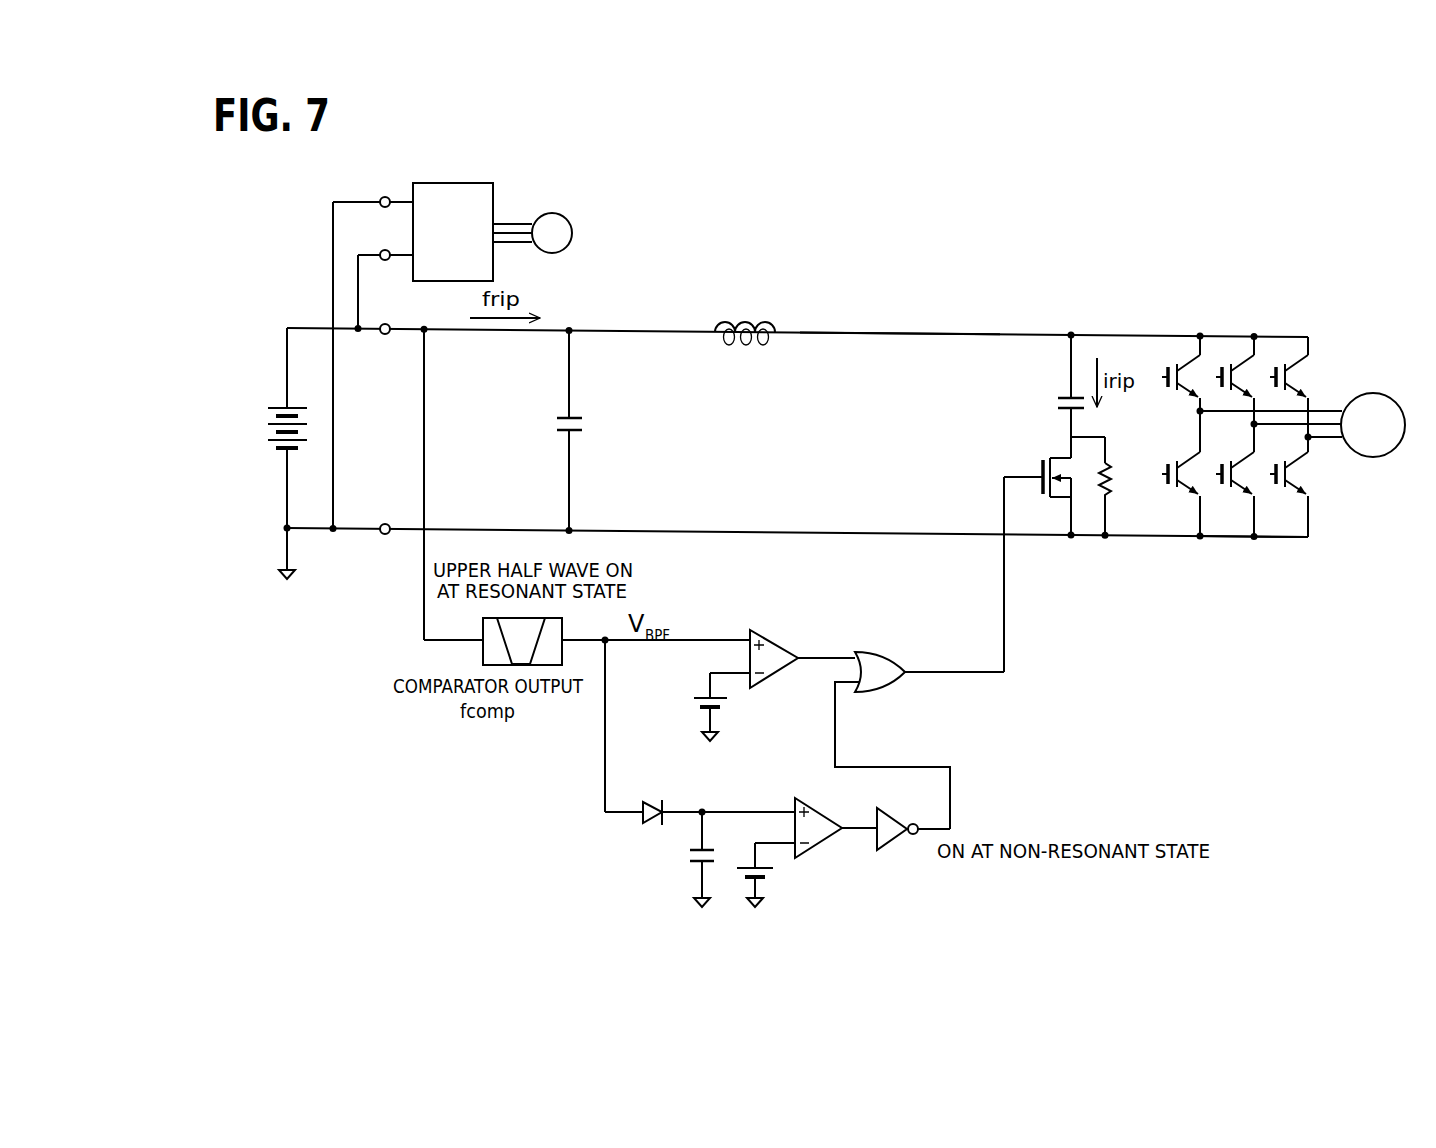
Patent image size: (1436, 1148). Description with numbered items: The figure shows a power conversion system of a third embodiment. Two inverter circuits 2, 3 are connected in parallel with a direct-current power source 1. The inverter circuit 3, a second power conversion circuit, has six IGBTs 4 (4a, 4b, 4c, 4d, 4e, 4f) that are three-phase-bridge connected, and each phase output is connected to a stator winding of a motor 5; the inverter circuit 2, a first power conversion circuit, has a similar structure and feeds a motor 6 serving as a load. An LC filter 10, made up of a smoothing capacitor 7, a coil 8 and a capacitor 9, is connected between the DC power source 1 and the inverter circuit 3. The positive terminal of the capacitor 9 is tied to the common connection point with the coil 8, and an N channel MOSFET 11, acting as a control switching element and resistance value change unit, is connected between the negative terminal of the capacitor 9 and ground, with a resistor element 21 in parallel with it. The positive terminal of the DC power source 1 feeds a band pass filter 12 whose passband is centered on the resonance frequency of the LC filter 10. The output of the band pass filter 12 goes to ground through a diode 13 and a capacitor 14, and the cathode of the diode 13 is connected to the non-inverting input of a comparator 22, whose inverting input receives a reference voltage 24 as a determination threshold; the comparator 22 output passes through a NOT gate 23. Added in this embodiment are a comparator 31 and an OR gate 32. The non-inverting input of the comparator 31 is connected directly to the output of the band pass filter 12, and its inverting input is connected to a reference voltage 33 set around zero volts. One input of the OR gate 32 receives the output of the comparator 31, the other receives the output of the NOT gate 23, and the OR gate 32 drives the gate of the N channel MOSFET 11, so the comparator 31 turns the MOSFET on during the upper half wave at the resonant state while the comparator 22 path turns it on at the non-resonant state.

The DC power source 1 is at (268, 416).
The inverter circuit 2 is at (455, 183).
The inverter circuit 3 is at (1268, 320).
The IGBTs 4 is at (1272, 580).
The IGBT 4a is at (1164, 371).
The IGBT 4b is at (1164, 473).
The IGBT 4c is at (1231, 360).
The IGBT 4d is at (1235, 500).
The IGBT 4e is at (1304, 374).
The IGBT 4f is at (1303, 478).
The motor 5 is at (1376, 392).
The motor 6 is at (566, 222).
The smoothing capacitor 7 is at (588, 425).
The coil 8 is at (750, 320).
The capacitor 9 is at (1055, 406).
The LC filter 10 is at (943, 310).
The N channel MOSFET 11 is at (1041, 470).
The band pass filter 12 is at (562, 630).
The diode 13 is at (656, 825).
The capacitor 14 is at (685, 858).
The resistor element 21 is at (1113, 488).
The comparator 22 is at (820, 843).
The NOT gate 23 is at (890, 845).
The reference voltage 24 is at (771, 879).
The comparator 31 is at (776, 673).
The OR gate 32 is at (897, 690).
The reference voltage 33 is at (690, 701).